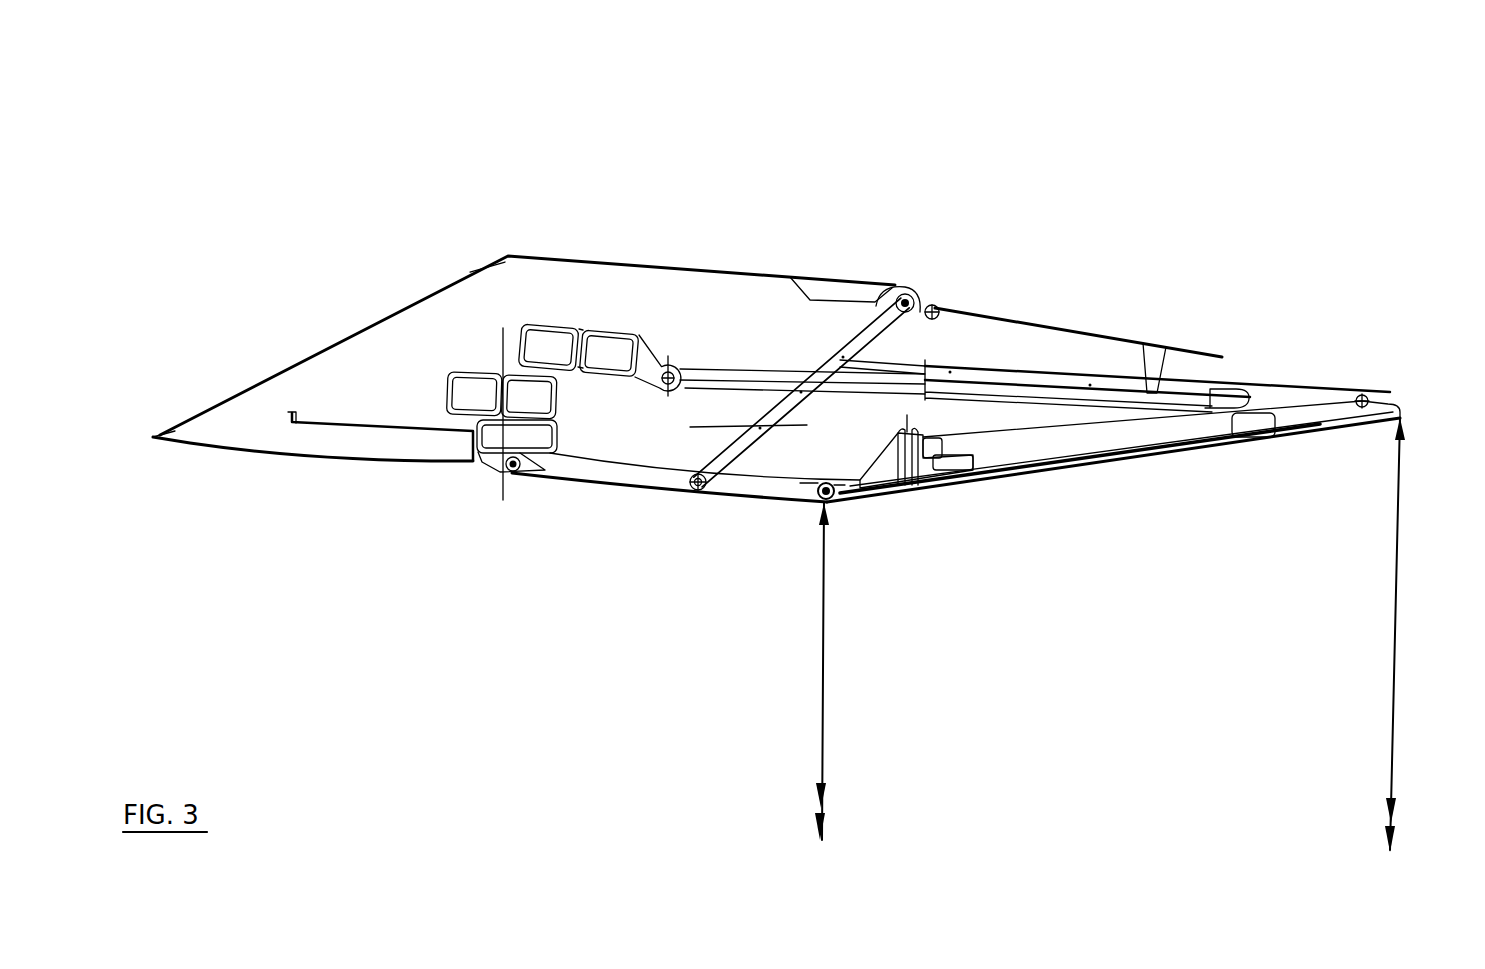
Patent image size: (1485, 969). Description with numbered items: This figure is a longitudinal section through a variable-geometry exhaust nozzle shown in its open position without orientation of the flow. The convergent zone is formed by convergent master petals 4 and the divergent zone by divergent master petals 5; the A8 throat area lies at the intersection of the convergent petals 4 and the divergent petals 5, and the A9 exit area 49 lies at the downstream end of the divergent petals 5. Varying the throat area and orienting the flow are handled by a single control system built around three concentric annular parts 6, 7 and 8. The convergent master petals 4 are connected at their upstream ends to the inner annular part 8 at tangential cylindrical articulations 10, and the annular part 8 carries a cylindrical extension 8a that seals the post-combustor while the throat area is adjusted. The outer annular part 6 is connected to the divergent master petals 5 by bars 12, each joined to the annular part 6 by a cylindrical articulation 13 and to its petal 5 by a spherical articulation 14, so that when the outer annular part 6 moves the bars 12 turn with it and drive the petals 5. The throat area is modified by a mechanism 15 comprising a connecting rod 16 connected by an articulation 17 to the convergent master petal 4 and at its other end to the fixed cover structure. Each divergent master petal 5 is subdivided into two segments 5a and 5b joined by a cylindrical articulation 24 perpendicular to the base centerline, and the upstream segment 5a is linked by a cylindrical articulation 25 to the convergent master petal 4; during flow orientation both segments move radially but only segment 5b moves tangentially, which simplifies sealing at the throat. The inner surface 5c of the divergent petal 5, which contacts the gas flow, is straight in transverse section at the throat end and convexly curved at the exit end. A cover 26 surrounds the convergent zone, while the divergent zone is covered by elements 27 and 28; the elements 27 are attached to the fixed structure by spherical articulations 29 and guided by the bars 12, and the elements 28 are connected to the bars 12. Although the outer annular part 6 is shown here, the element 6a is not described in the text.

The convergent master petal 4 is at (596, 475).
The divergent master petal 5 is at (1173, 460).
The upstream segment of divergent master petal 5a is at (883, 470).
The downstream segment of divergent master petal 5b is at (1048, 452).
The inner surface of divergent master petal 5c is at (1318, 433).
The outer annular part 6 is at (527, 321).
The hinge part 6a is at (560, 321).
The annular part 7 is at (457, 367).
The inner annular part 8 is at (548, 458).
The cylindrical extension 8a is at (310, 425).
The tangential cylindrical articulation 10 is at (500, 470).
The bar 12 is at (762, 372).
The cylindrical articulation 13 is at (662, 362).
The spherical articulation 14 is at (1363, 394).
The mechanism for modifying the A8 throat area 15 is at (820, 685).
The connecting rod 16 is at (689, 428).
The articulation 17 is at (697, 492).
The cylindrical articulation 24 is at (918, 487).
The cylindrical articulation 25 is at (817, 492).
The cover 26 is at (876, 282).
The cover element 27 is at (1124, 334).
The cover element 28 is at (1260, 380).
The spherical articulation 29 is at (937, 306).
The A9 exit area 49 is at (1391, 690).